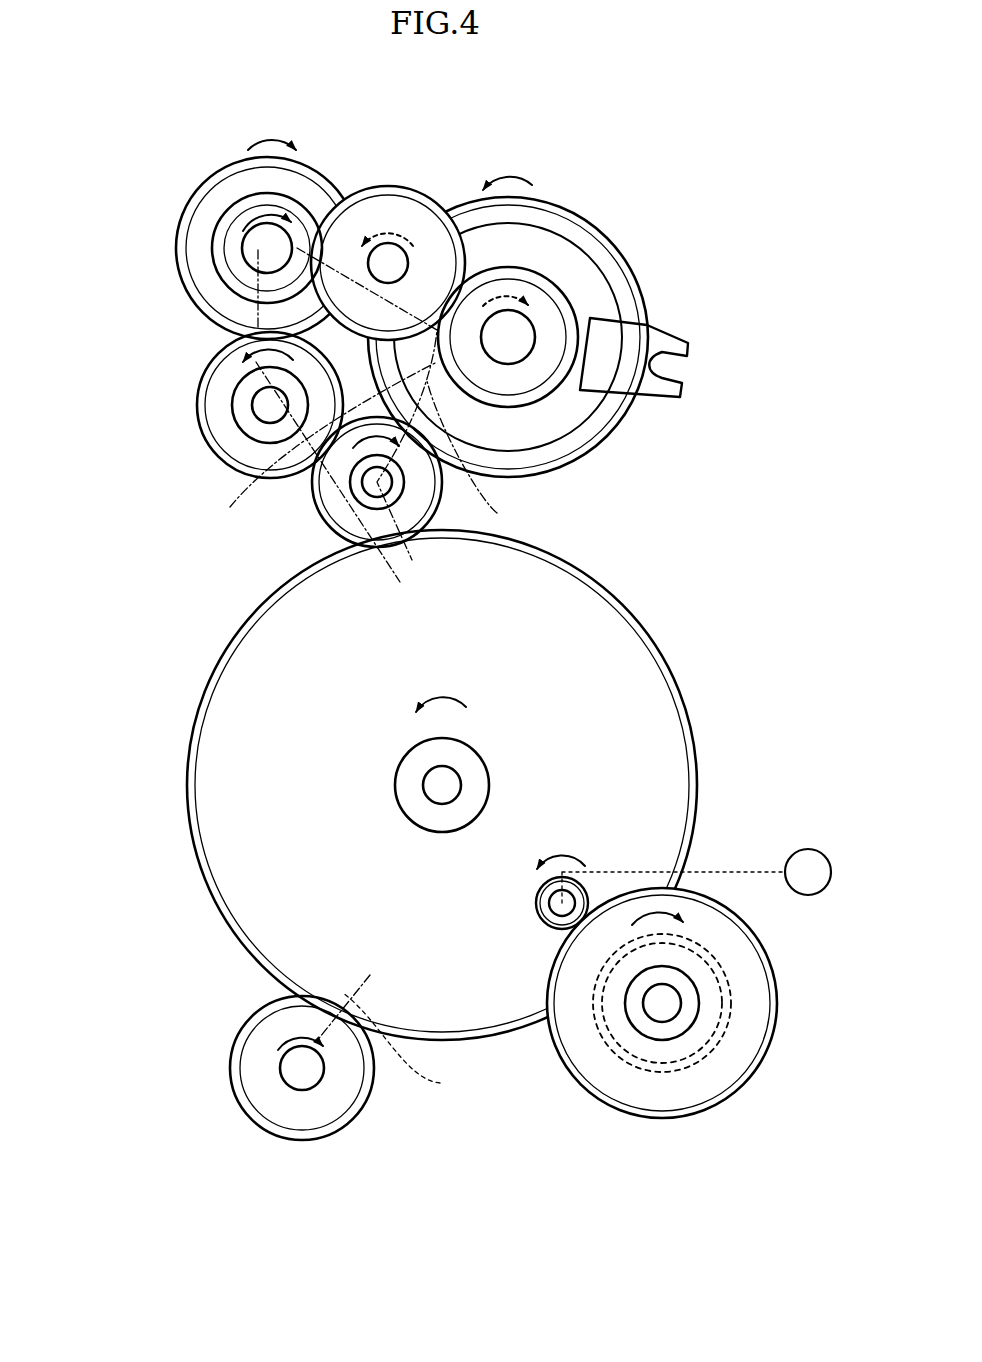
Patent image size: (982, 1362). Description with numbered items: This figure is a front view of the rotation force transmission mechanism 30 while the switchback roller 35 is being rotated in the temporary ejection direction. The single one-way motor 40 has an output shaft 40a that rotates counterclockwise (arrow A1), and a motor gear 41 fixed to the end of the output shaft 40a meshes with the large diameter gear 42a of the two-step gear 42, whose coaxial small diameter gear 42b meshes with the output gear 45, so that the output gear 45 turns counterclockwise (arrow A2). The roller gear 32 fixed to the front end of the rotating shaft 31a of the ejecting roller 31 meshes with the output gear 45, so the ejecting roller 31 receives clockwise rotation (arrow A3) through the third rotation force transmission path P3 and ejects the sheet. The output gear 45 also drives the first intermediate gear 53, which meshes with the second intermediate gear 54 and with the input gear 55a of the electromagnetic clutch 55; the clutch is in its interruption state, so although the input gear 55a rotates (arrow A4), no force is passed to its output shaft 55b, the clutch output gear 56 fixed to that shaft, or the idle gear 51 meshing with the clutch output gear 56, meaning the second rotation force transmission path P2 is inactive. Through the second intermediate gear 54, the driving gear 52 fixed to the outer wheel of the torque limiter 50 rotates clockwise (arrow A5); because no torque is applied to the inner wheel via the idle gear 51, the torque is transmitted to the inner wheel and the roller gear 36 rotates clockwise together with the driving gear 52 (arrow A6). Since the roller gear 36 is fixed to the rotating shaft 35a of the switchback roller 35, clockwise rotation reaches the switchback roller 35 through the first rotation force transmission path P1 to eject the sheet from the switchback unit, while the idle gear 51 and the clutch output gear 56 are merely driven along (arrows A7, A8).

The rotation force transmission mechanism 30 is at (120, 113).
The ejecting roller 31 is at (222, 1070).
The rotating shaft of the ejecting roller 31a is at (290, 1077).
The roller gear 32 is at (270, 1128).
The switchback roller 35 is at (212, 258).
The rotating shaft of the switchback roller 35a is at (192, 255).
The roller gear 36 is at (220, 230).
The motor 40 is at (806, 846).
The output shaft 40a is at (552, 903).
The motor gear 41 is at (545, 926).
The two-step gear 42 is at (565, 1084).
The large diameter gear 42a is at (706, 1108).
The small diameter gear 42b is at (632, 1062).
The output gear 45 is at (186, 782).
The torque limiter 50 is at (207, 165).
The idle gear 51 is at (387, 182).
The driving gear 52 is at (241, 160).
The first intermediate gear 53 is at (310, 500).
The second intermediate gear 54 is at (190, 406).
The electromagnetic clutch 55 is at (542, 193).
The input gear 55a is at (538, 473).
The output shaft 55b is at (537, 340).
The clutch output gear 56 is at (548, 287).
The first rotation force transmission path P1 is at (317, 445).
The second rotation force transmission path P2 is at (480, 455).
The third rotation force transmission path P3 is at (395, 1037).
The arrow A1 is at (561, 849).
The arrow A2 is at (441, 694).
The arrow A3 is at (300, 1032).
The arrow A4 is at (507, 173).
The arrow A5 is at (272, 132).
The arrow A6 is at (267, 200).
The arrow A7 is at (387, 229).
The arrow A8 is at (505, 290).